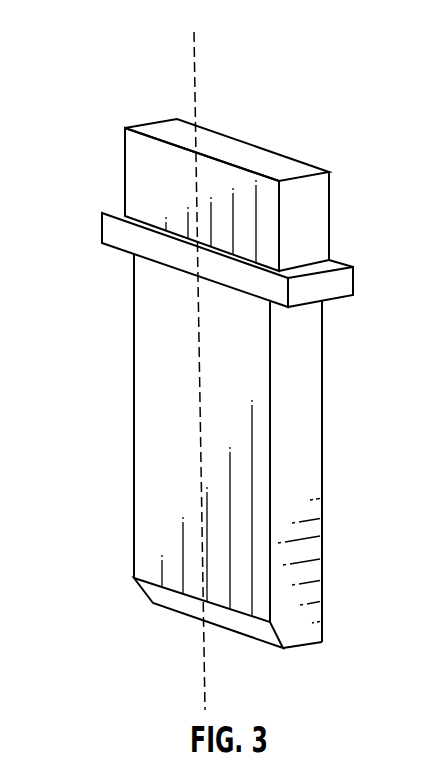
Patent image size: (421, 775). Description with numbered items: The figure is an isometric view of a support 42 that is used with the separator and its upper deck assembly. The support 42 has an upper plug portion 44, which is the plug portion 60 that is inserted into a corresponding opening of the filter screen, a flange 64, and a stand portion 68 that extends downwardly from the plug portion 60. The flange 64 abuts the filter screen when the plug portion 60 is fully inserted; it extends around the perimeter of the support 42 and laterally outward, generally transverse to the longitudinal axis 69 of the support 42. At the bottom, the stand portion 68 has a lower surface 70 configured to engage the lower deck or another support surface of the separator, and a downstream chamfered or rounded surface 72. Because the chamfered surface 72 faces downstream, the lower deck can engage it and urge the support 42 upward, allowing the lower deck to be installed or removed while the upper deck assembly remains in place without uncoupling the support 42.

The support 42 is at (90, 273).
The upper plug portion 44 is at (315, 200).
The plug portion 60 is at (138, 157).
The flange 64 is at (337, 283).
The stand portion 68 is at (160, 415).
The longitudinal axis 69 is at (193, 52).
The lower surface 70 is at (302, 648).
The chamfered surface 72 is at (168, 593).